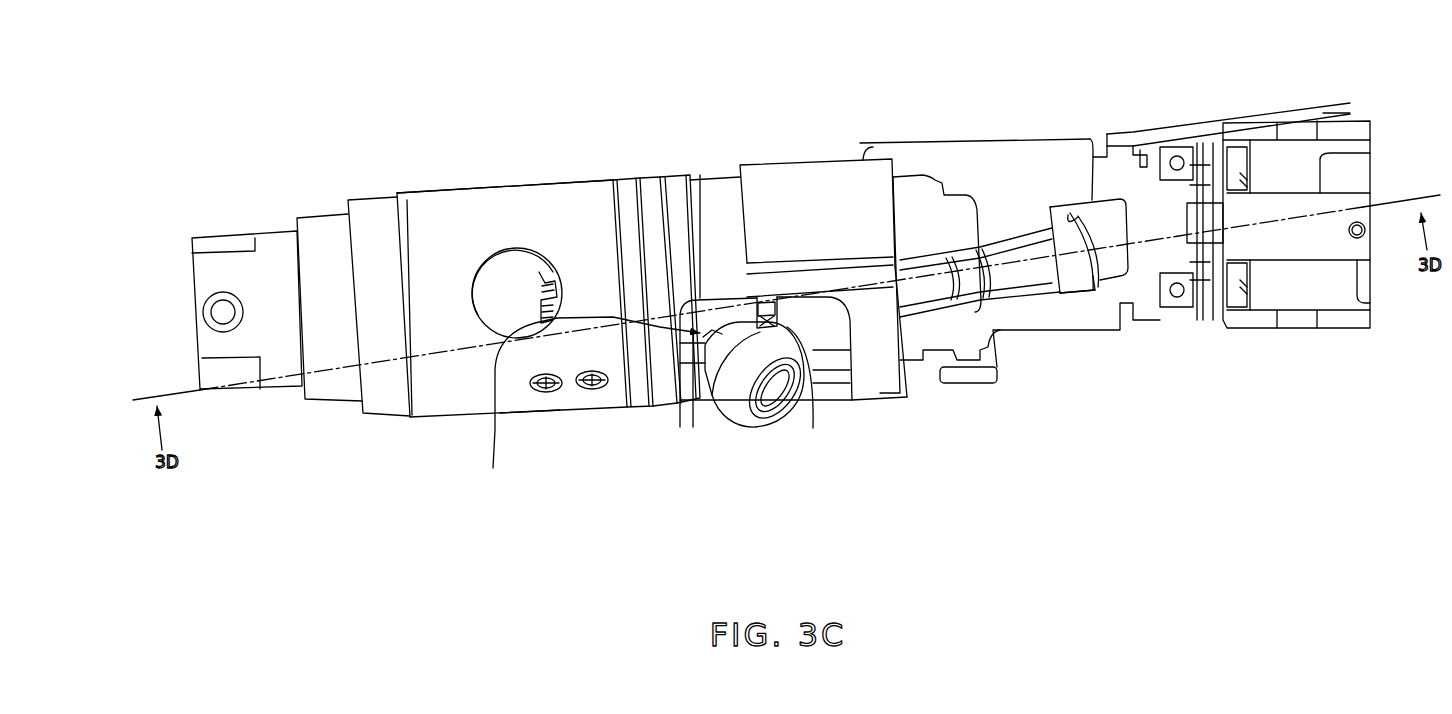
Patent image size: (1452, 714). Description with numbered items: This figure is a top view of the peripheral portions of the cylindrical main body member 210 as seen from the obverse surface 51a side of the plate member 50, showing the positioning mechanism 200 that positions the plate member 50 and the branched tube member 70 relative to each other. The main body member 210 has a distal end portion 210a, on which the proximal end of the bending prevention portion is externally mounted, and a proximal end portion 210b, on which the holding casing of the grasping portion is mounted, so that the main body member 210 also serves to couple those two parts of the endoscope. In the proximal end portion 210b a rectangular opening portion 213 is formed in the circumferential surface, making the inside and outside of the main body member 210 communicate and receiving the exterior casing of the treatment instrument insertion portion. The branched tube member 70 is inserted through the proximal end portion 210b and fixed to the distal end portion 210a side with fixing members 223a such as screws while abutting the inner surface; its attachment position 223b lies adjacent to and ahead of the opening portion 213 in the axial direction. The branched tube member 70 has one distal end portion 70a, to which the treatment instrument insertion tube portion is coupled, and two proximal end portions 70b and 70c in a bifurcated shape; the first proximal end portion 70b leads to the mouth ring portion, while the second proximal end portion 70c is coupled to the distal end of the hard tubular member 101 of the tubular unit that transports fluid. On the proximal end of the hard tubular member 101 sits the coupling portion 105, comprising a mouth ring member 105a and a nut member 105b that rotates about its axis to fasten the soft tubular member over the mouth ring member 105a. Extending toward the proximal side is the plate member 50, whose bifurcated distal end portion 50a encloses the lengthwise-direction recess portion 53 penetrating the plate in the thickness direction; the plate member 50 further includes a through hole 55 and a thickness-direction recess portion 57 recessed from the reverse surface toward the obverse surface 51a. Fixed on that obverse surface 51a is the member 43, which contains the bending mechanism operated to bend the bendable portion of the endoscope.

The positioning mechanism 200 is at (533, 150).
The main body member 210 is at (430, 220).
The distal end portion 210a is at (277, 250).
The proximal end portion 210b is at (837, 160).
The opening portion 213 is at (763, 280).
The lengthwise-direction recess portion 53 is at (916, 207).
The distal end portion 50a is at (911, 138).
The plate member 50 is at (1015, 142).
The obverse surface 51a is at (965, 165).
The thickness-direction recess portion 57 is at (1025, 243).
The through hole 55 is at (1083, 185).
The member 43 is at (1280, 155).
The coupling portion 105 is at (1106, 276).
The mouth ring member 105a is at (1070, 277).
The nut member 105b is at (1110, 228).
The hard tubular member 101 is at (934, 300).
The branched tube member 70 is at (687, 398).
The distal end portion 70a is at (588, 402).
The first proximal end portion 70b is at (735, 405).
The second proximal end portion 70c is at (806, 400).
The fixing members 223a is at (540, 394).
The attachment position 223b is at (525, 414).